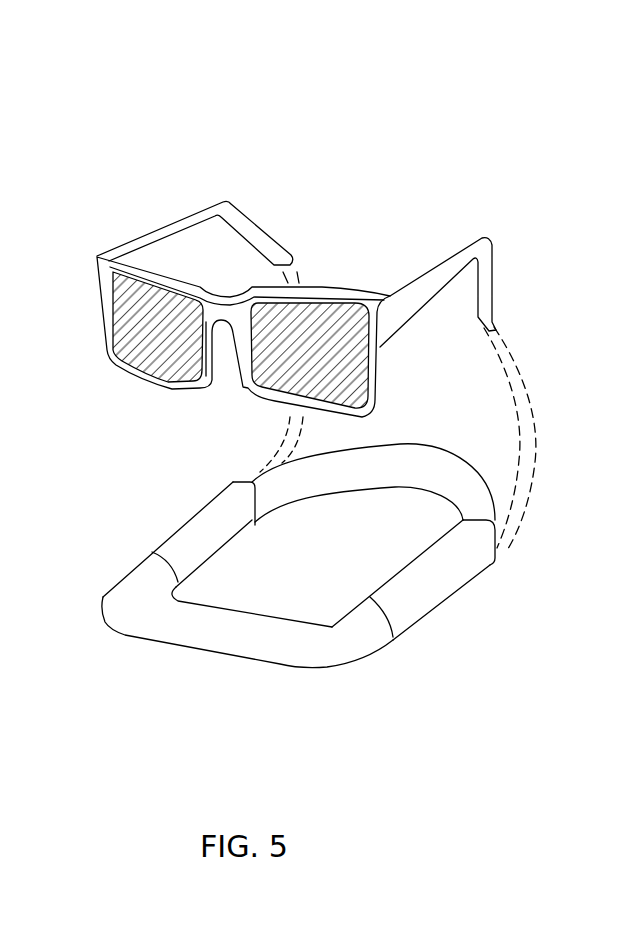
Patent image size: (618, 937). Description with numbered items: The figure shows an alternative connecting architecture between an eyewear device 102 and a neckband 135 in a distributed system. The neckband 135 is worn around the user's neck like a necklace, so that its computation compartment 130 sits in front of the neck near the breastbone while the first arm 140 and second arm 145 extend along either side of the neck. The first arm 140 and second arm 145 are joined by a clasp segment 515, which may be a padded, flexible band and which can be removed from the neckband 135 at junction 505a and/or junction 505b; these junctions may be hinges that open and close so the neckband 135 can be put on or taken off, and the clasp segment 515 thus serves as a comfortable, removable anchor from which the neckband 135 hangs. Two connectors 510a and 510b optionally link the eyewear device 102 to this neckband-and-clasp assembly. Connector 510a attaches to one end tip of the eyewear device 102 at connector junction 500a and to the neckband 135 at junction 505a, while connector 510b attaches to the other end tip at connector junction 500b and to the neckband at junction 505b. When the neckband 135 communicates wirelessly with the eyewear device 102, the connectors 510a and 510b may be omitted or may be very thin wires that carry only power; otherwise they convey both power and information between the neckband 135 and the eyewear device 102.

The eyewear device 102 is at (103, 162).
The connector junction 500a is at (294, 261).
The connector junction 500b is at (495, 323).
The connector 510a is at (277, 452).
The connector 510b is at (520, 388).
The clasp segment 515 is at (438, 447).
The first arm 140 is at (177, 525).
The junction 505a is at (257, 522).
The junction 505b is at (497, 552).
The second arm 145 is at (445, 603).
The computation compartment 130 is at (284, 662).
The neckband 135 is at (258, 745).